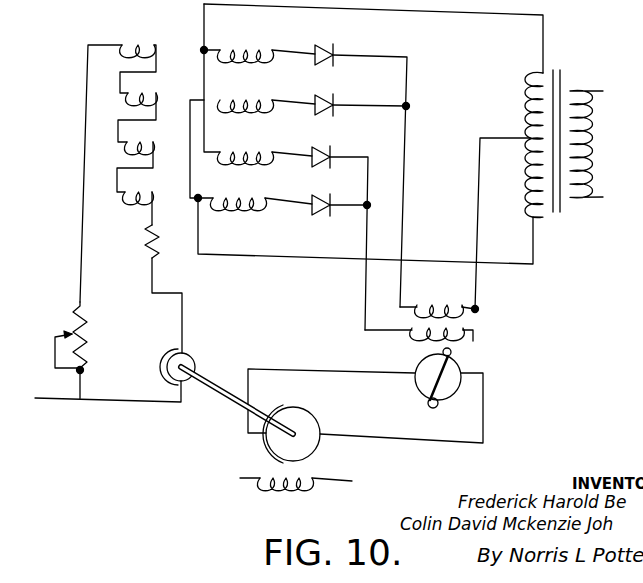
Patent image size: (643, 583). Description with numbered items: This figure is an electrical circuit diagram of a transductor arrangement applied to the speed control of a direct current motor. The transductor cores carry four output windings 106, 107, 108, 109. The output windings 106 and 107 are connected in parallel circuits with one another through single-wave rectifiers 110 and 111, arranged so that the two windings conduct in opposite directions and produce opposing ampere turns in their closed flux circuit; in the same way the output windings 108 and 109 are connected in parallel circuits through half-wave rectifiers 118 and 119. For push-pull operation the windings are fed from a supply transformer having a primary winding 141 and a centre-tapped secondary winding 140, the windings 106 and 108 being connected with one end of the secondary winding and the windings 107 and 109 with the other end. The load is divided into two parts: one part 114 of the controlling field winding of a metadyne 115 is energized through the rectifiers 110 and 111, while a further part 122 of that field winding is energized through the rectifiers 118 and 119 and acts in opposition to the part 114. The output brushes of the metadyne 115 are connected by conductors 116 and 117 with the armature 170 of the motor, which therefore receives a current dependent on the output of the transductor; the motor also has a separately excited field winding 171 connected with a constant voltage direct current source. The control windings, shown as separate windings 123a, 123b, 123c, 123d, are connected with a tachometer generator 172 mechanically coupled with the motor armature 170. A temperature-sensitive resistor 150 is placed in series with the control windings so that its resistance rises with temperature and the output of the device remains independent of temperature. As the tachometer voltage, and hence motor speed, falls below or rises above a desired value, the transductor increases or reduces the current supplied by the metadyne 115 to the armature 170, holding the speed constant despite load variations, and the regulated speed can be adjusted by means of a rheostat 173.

The output winding 106 is at (257, 43).
The output winding 107 is at (260, 99).
The output winding 108 is at (260, 147).
The output winding 109 is at (260, 199).
The rectifier 110 is at (323, 47).
The rectifier 111 is at (326, 105).
The rectifier 118 is at (319, 154).
The rectifier 119 is at (321, 202).
The part of controlling field winding 114 is at (427, 302).
The further part of controlling field winding 122 is at (462, 323).
The metadyne 115 is at (410, 425).
The conductor 116 is at (483, 395).
The conductor 117 is at (330, 368).
The control winding 123a is at (138, 38).
The control winding 123b is at (145, 87).
The control winding 123c is at (138, 134).
The control winding 123d is at (138, 186).
The centre-tapped secondary winding 140 is at (530, 110).
The primary winding 141 is at (587, 148).
The resistor 150 is at (160, 245).
The armature 170 is at (316, 443).
The separately excited field winding 171 is at (305, 487).
The tachometer generator 172 is at (190, 385).
The rheostat 173 is at (85, 338).